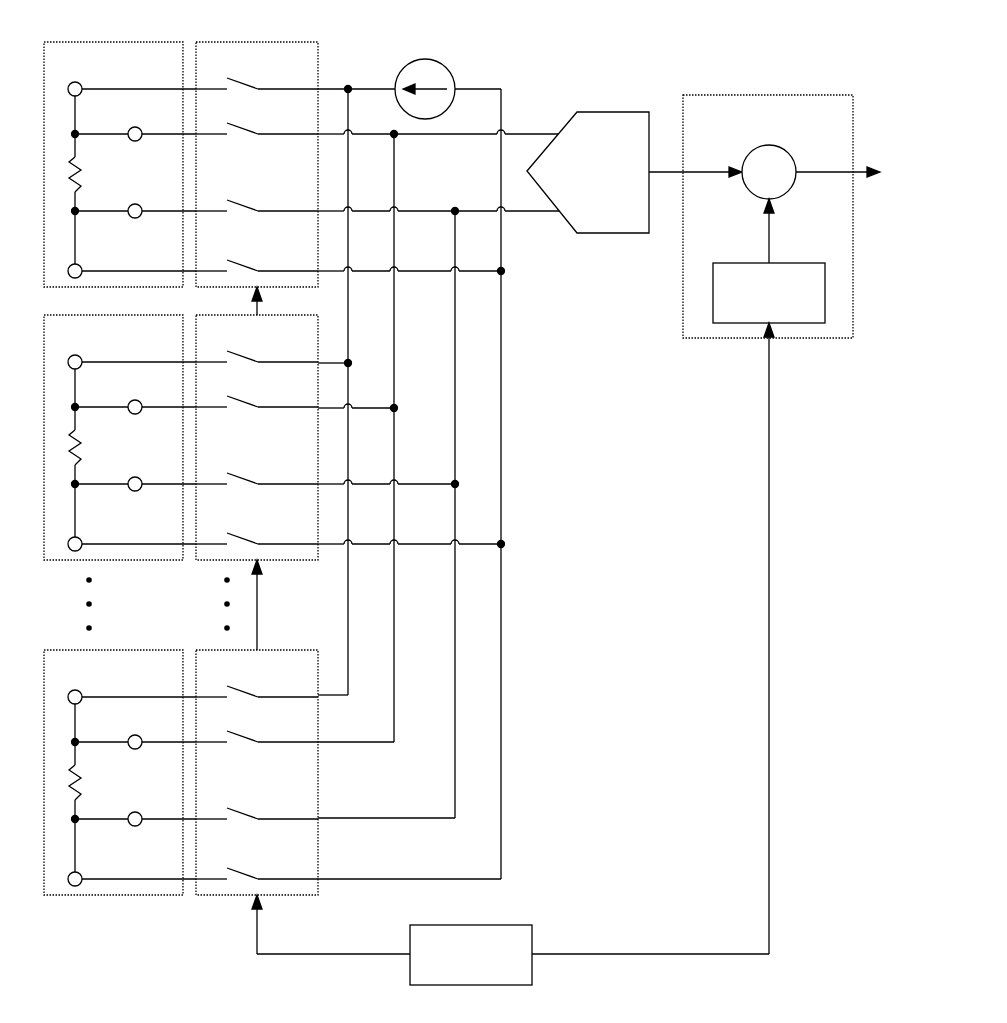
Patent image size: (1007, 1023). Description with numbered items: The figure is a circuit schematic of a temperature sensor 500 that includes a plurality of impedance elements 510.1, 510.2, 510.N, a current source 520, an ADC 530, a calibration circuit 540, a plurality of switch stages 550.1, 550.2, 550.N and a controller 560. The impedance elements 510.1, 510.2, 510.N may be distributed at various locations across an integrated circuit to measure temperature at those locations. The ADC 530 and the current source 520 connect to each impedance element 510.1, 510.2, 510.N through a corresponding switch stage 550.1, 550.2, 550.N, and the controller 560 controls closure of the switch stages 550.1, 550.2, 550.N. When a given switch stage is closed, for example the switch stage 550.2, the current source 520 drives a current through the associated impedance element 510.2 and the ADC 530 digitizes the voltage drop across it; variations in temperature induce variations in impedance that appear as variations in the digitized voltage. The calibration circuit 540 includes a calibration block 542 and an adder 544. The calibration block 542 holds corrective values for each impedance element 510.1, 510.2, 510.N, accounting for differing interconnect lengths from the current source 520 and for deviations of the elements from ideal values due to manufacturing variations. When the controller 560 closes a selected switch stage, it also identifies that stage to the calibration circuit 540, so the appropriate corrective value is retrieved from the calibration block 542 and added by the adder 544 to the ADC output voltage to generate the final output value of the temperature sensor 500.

The temperature sensor 500 is at (462, 513).
The impedance element 510.1 is at (120, 164).
The impedance element 510.2 is at (120, 437).
The impedance element 510.N is at (120, 772).
The current source 520 is at (397, 71).
The ADC 530 is at (588, 172).
The calibration circuit 540 is at (768, 524).
The calibration block 542 is at (769, 293).
The adder 544 is at (797, 195).
The switch stage 550.1 is at (257, 178).
The switch stage 550.2 is at (257, 482).
The switch stage 550.N is at (257, 802).
The controller 560 is at (471, 955).